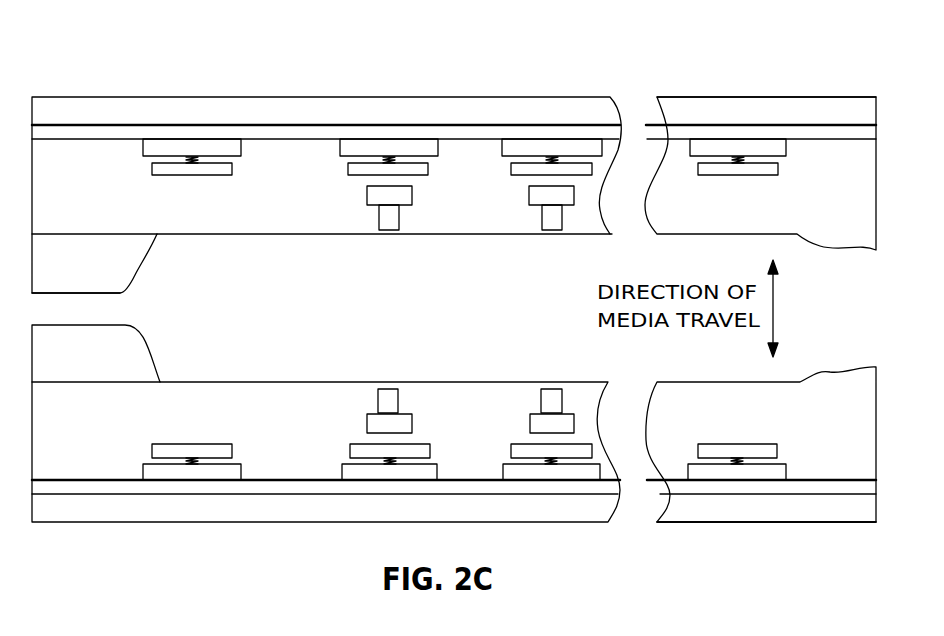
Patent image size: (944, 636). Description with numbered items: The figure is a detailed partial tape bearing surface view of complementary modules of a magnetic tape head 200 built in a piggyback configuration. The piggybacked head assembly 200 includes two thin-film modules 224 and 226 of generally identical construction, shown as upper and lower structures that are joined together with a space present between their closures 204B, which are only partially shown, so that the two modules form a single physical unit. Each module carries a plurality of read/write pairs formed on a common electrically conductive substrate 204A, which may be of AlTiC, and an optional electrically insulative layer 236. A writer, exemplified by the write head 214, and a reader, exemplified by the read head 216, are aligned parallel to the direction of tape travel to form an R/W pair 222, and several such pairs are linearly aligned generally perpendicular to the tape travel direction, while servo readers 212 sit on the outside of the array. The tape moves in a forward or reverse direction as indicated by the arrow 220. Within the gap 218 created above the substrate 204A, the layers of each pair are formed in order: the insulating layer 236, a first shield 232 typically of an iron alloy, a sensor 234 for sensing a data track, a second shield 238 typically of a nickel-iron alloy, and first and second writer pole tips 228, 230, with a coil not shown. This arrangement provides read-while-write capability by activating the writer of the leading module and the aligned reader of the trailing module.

The magnetic tape head 200 is at (379, 82).
The common substrate 204A is at (170, 123).
The closure 204B is at (135, 272).
The servo reader 212 is at (234, 438).
The write head 214 is at (382, 387).
The read head 216 is at (372, 445).
The gap 218 is at (240, 236).
The arrow 220 is at (775, 312).
The R/W pair 222 is at (372, 394).
The thin-film module 224 is at (796, 97).
The thin-film module 226 is at (780, 522).
The first writer pole tip 228 is at (367, 423).
The second writer pole tip 230 is at (376, 411).
The first shield 232 is at (342, 468).
The sensor 234 is at (336, 455).
The electrically insulative layer 236 is at (870, 469).
The second shield 238 is at (350, 449).